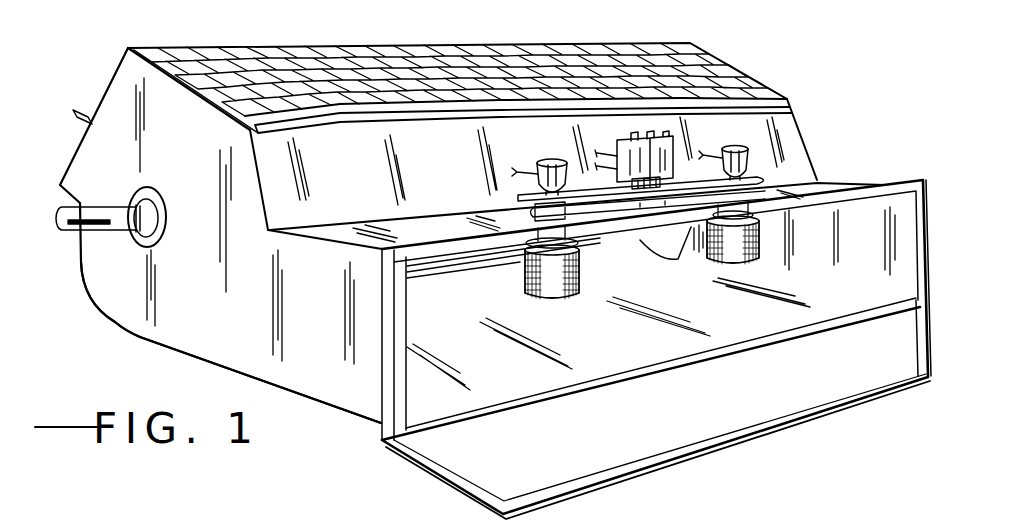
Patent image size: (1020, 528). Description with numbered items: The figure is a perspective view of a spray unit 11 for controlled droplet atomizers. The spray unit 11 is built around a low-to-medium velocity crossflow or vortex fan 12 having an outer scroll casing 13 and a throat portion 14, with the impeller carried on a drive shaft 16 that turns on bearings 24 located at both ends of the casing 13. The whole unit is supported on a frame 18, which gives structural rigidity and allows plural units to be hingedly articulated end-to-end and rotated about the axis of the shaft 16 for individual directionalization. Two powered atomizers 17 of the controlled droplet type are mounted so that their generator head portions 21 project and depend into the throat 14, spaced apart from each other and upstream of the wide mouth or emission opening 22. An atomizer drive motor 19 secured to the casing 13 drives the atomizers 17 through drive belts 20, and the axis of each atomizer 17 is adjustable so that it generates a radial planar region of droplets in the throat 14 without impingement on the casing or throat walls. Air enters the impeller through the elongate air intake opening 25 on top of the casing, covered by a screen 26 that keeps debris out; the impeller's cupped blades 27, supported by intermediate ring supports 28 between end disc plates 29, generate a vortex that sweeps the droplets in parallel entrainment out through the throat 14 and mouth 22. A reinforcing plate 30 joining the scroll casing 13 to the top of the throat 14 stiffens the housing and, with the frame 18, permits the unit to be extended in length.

The spray unit 11 is at (82, 331).
The crossflow fan 12 is at (824, 170).
The outer scroll casing 13 is at (181, 335).
The throat portion 14 is at (641, 323).
The drive shaft 16 is at (126, 232).
The powered atomizers 17 is at (590, 263).
The frame 18 is at (678, 373).
The atomizer drive motor 19 is at (672, 140).
The drive belts 20 is at (768, 190).
The generator head portions 21 is at (535, 298).
The wide mouth or emission opening 22 is at (906, 203).
The bearings 24 is at (167, 200).
The elongate air intake opening 25 is at (223, 40).
The screen 26 is at (130, 53).
The blades 27 is at (410, 270).
The intermediate ring supports 28 is at (470, 258).
The end disc plates 29 is at (680, 252).
The reinforcing plate 30 is at (273, 193).